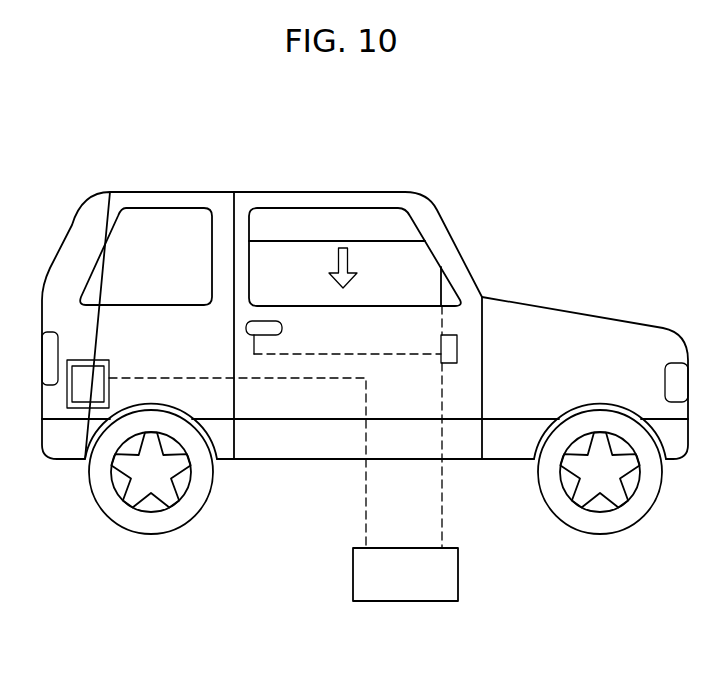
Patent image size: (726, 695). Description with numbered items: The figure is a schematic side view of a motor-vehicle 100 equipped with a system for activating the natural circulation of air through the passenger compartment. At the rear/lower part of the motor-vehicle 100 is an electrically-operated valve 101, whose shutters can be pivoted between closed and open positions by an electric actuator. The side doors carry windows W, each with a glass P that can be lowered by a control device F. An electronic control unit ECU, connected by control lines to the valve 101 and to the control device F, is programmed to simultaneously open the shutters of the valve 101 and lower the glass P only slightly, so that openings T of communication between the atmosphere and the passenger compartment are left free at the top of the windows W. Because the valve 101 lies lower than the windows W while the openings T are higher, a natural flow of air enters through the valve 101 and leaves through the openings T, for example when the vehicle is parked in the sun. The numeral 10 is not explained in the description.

The motor-vehicle 100 is at (541, 245).
The rear door window 10 is at (128, 257).
The electrically-operated valve 101 is at (92, 385).
The window W is at (402, 226).
The opening T is at (337, 220).
The glass P is at (379, 257).
The control device F is at (457, 350).
The electronic control unit ECU is at (405, 574).